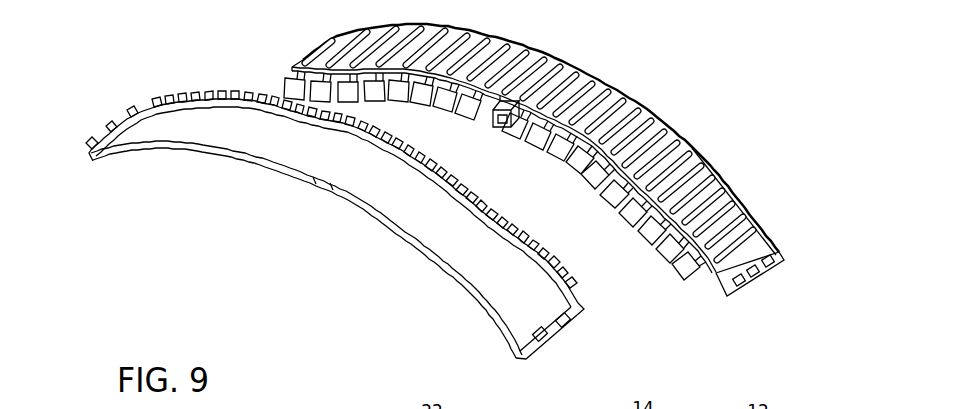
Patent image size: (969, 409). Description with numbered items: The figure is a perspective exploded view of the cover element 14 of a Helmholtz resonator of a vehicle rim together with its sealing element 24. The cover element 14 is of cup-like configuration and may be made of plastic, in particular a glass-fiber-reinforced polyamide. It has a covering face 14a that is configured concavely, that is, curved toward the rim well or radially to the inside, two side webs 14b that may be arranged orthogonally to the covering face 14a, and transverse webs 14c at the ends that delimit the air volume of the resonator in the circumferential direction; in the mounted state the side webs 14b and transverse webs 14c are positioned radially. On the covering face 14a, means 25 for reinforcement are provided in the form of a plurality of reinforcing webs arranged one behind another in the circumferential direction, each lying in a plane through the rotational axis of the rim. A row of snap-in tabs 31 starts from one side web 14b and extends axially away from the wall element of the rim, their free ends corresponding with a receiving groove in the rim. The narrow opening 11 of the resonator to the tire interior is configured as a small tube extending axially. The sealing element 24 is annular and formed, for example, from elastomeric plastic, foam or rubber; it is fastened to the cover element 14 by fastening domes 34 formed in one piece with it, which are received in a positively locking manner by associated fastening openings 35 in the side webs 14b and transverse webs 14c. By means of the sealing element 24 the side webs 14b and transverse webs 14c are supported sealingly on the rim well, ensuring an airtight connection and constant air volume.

The cover element 14 is at (530, 174).
The covering face 14a is at (672, 148).
The side webs 14b is at (700, 248).
The transverse webs 14c is at (299, 60).
The means for reinforcement 25 is at (588, 85).
The snap-in tabs 31 is at (562, 145).
The fastening openings 35 is at (782, 263).
The narrow opening 11 is at (498, 140).
The sealing element 24 is at (341, 227).
The fastening domes 34 is at (550, 328).